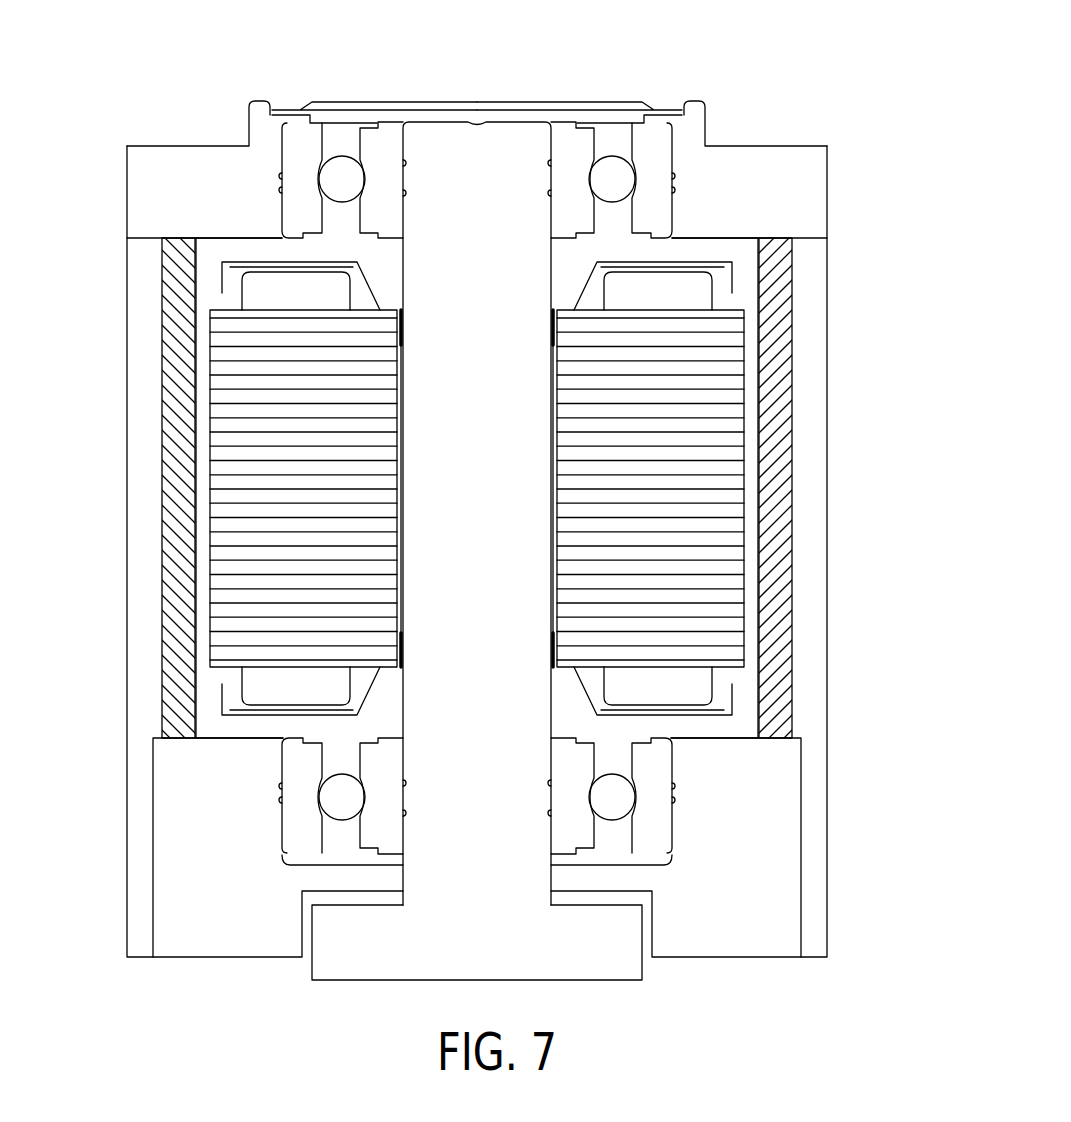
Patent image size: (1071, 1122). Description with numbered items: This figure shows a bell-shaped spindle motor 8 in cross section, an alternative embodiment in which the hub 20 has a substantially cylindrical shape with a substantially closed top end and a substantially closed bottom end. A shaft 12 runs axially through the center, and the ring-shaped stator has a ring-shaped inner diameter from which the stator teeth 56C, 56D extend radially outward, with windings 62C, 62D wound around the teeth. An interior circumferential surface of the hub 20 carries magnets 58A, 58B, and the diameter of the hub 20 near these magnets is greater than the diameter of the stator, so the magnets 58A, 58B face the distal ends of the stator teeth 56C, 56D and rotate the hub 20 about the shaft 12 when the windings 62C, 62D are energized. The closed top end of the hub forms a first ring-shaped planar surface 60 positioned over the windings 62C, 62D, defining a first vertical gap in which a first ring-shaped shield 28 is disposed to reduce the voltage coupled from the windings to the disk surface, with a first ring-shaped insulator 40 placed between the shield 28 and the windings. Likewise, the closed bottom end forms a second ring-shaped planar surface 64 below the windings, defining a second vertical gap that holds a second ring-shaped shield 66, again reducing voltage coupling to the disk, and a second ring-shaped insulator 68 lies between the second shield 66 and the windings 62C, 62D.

The spindle motor 8 is at (481, 497).
The shaft 12 is at (463, 281).
The hub 20 is at (183, 174).
The first ring-shaped shield 28 is at (237, 262).
The first ring-shaped insulator 40 is at (262, 267).
The stator tooth 56C is at (232, 555).
The stator tooth 56D is at (726, 553).
The magnet 58A is at (178, 455).
The magnet 58B is at (776, 468).
The first ring-shaped planar surface 60 is at (213, 228).
The winding 62C is at (258, 303).
The winding 62D is at (695, 300).
The second ring-shaped planar surface 64 is at (216, 750).
The second ring-shaped shield 66 is at (237, 715).
The second ring-shaped insulator 68 is at (262, 710).